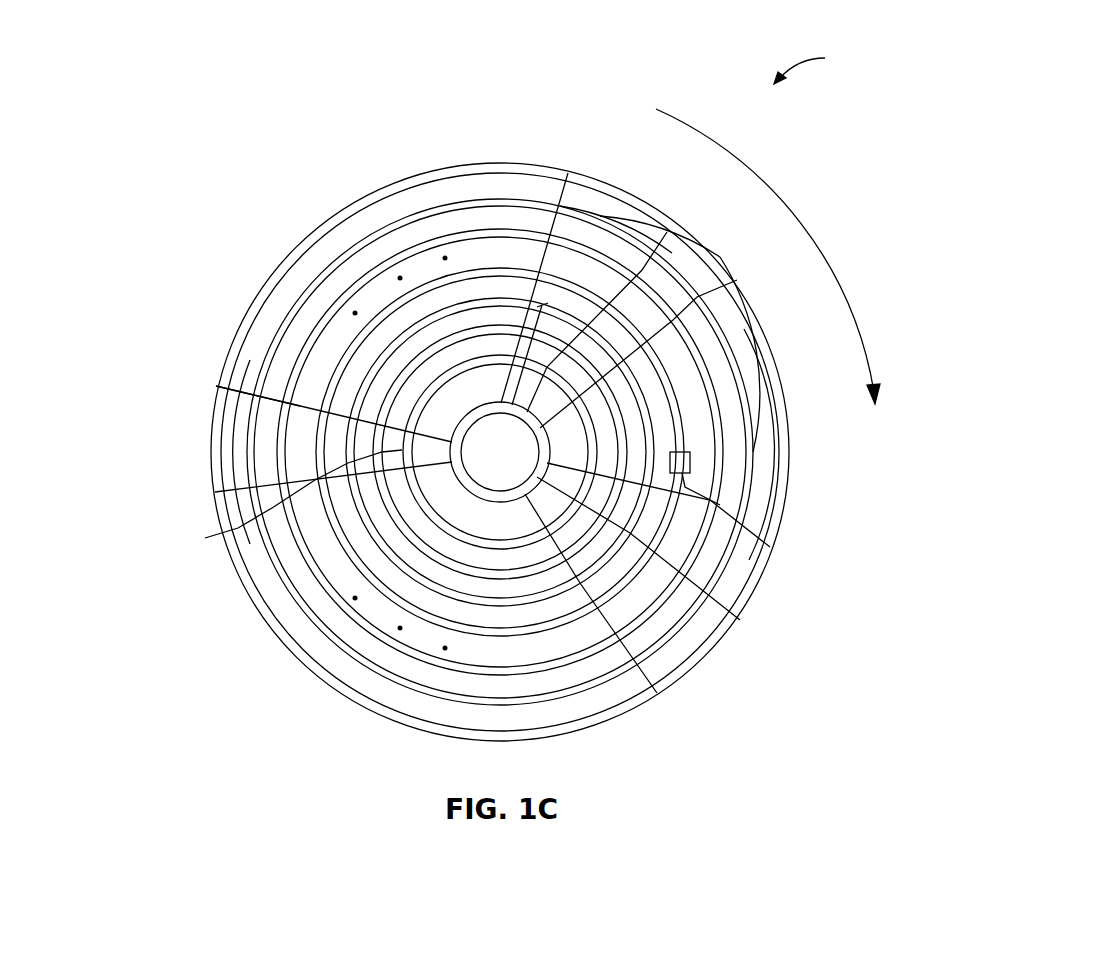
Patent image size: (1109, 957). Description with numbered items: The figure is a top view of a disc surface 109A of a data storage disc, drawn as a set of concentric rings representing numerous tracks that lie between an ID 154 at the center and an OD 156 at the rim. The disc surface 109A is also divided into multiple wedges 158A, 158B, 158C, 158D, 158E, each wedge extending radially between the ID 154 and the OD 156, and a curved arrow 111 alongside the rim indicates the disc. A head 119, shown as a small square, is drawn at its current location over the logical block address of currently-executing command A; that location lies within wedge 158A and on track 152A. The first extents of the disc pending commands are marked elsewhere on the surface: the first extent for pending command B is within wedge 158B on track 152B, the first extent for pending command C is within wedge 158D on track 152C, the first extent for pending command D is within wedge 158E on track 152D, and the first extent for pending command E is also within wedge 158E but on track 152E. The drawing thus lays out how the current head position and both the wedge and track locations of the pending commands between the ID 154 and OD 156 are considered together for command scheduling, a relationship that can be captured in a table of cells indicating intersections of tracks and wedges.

The disc surface 109A is at (829, 66).
The rotation direction 111 is at (808, 222).
The head 119 is at (693, 463).
The track 152A is at (709, 517).
The track 152B is at (737, 280).
The track 152C is at (569, 272).
The track 152D is at (210, 417).
The track 152E is at (205, 538).
The ID 154 is at (534, 428).
The OD 156 is at (330, 210).
The wedge 158A is at (808, 444).
The wedge 158B is at (768, 372).
The wedge 158C is at (700, 270).
The wedge 158D is at (647, 227).
The wedge 158E is at (225, 467).